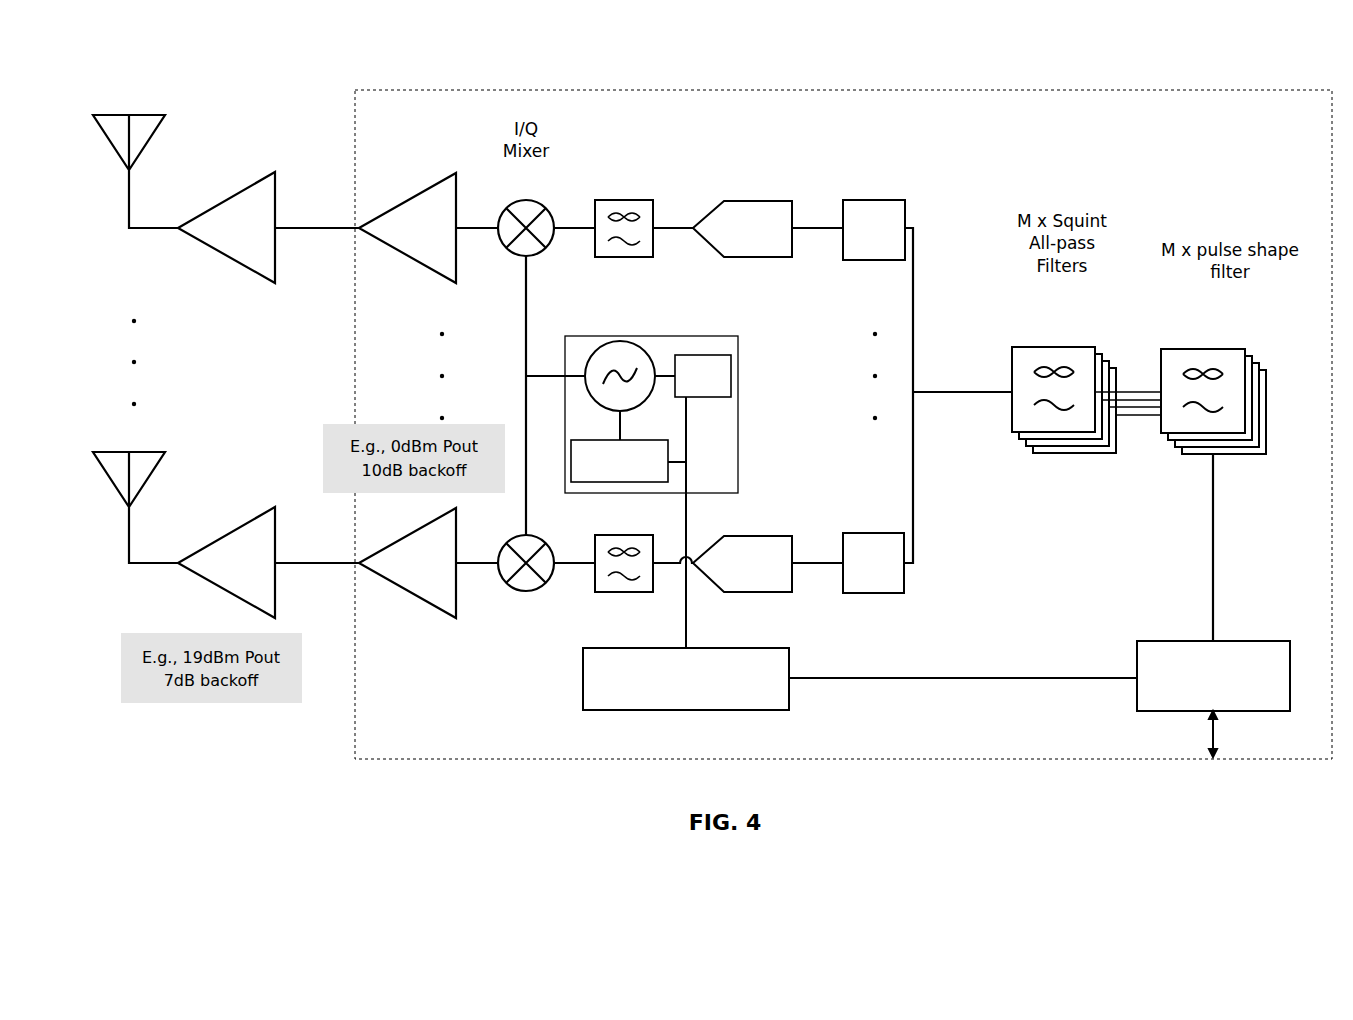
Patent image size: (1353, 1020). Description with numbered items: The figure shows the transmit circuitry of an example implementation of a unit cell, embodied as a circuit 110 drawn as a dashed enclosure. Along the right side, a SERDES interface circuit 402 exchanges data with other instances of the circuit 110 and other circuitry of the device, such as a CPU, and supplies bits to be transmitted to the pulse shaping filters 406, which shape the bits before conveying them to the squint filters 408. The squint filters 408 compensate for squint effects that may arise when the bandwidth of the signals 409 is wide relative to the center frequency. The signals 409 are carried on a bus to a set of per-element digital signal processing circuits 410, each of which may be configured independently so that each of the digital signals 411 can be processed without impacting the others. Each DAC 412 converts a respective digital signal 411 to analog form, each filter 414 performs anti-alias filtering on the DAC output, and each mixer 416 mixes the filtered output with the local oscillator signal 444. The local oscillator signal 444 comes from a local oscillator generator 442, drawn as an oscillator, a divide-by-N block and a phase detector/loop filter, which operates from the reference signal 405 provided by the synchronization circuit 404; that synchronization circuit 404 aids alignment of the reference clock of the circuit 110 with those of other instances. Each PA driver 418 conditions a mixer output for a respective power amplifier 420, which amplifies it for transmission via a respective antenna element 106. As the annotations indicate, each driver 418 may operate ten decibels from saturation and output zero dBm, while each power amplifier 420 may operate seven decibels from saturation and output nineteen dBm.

The circuit 110 is at (409, 90).
The antenna elements 106 is at (113, 115).
The power amplifiers 420 is at (232, 199).
The PA drivers 418 is at (410, 199).
The mixers 416 is at (512, 203).
The filters 414 is at (618, 200).
The DACs 412 is at (750, 200).
The digital signals 411 is at (824, 226).
The per-element digital signal processing circuits 410 is at (865, 200).
The signals 409 is at (972, 391).
The squint filters 408 is at (1054, 334).
The pulse shaping filters 406 is at (1194, 347).
The synchronization circuit 404 is at (608, 647).
The reference signal 405 is at (688, 632).
The SERDES interface circuit 402 is at (1162, 640).
The local oscillator generator 442 is at (603, 335).
The local oscillator signal 444 is at (556, 378).